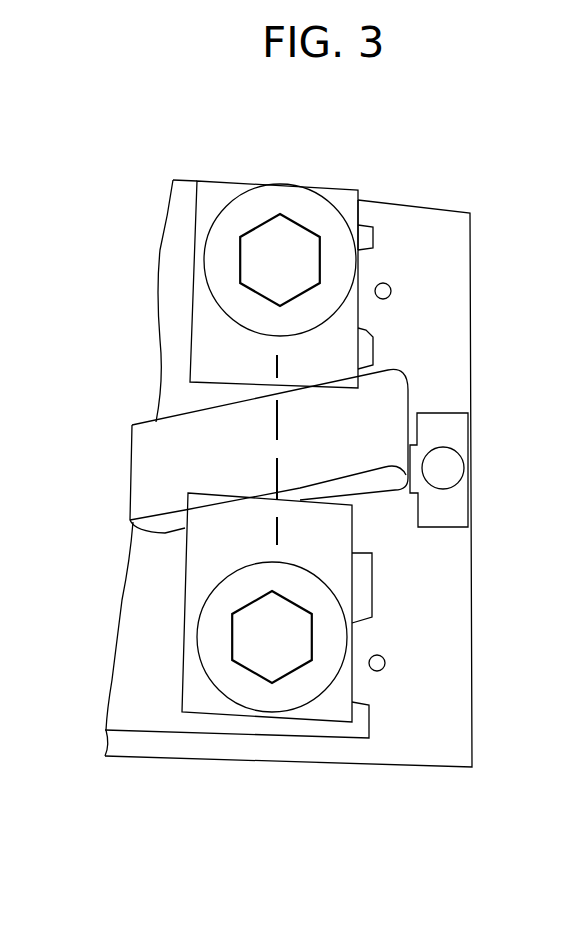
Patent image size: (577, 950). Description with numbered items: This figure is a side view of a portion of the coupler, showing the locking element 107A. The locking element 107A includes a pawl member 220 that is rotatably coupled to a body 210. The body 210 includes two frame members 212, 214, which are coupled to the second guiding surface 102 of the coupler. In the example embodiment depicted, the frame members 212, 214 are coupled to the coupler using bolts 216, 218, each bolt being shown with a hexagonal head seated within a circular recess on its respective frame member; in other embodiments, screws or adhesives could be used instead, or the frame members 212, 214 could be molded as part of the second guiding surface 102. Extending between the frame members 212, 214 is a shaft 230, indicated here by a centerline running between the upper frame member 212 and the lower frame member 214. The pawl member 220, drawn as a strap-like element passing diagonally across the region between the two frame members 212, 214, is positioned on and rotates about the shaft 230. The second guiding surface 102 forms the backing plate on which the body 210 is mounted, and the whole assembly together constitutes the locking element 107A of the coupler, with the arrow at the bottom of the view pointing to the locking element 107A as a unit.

The second guiding surface 102 is at (435, 277).
The body 210 is at (360, 220).
The frame member 212 is at (342, 195).
The frame member 214 is at (195, 692).
The bolt 216 is at (262, 262).
The bolt 218 is at (255, 635).
The pawl member 220 is at (400, 388).
The shaft 230 is at (276, 470).
The locking element 107A is at (287, 782).